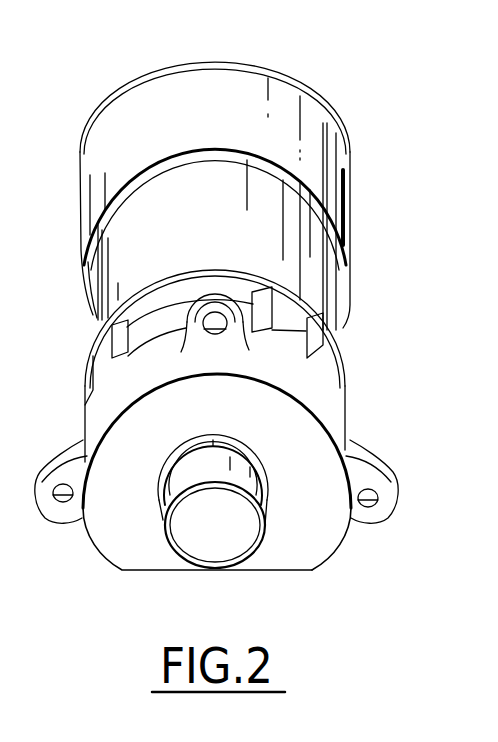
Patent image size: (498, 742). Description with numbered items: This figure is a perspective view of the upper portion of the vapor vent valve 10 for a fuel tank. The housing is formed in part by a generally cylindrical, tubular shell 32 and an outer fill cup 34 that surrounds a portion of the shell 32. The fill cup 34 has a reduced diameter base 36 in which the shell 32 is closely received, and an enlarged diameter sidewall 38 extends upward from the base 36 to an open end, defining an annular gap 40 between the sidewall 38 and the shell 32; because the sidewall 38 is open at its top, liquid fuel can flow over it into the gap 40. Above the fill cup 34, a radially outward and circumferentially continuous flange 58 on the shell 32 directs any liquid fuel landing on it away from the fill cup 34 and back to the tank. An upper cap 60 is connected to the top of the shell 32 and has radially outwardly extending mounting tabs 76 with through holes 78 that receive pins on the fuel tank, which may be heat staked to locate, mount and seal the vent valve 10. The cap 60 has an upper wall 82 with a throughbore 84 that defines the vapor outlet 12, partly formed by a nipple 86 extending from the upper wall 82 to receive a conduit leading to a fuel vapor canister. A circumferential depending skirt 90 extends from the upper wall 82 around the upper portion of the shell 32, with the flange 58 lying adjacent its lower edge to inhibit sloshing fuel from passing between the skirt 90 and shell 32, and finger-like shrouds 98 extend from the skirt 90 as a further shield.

The vent valve 10 is at (347, 76).
The vapor outlet 12 is at (188, 541).
The shell 32 is at (326, 288).
The fill cup 34 is at (356, 198).
The base 36 is at (250, 64).
The sidewall 38 is at (327, 127).
The annular gap 40 is at (338, 265).
The flange 58 is at (337, 366).
The upper cap 60 is at (325, 560).
The mounting tabs 76 is at (232, 321).
The through holes 78 is at (207, 334).
The upper wall 82 is at (295, 558).
The throughbore 84 is at (247, 556).
The nipple 86 is at (253, 487).
The skirt 90 is at (344, 416).
The shrouds 98 is at (298, 330).